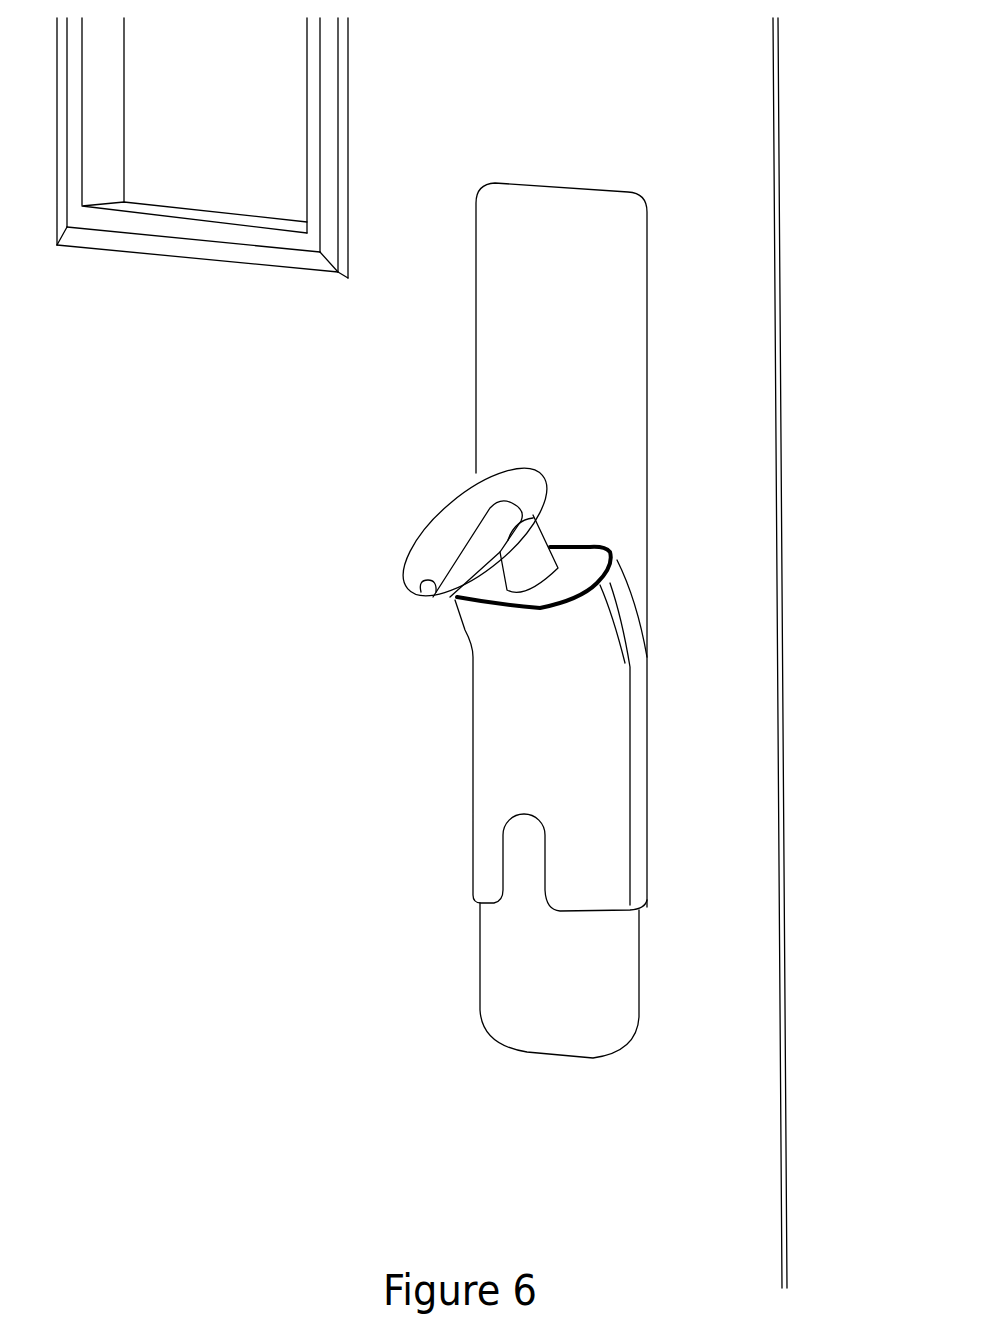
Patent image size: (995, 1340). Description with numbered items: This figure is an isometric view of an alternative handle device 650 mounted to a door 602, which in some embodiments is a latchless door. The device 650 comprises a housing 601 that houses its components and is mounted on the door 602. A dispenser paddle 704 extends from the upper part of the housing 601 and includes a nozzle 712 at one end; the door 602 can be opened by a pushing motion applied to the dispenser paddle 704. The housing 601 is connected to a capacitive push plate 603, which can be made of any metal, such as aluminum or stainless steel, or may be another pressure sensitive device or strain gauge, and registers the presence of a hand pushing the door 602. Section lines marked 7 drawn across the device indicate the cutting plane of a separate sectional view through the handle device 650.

The housing 601 is at (622, 697).
The door 602 is at (740, 540).
The capacitive push plate 603 is at (633, 422).
The alternative handle device 650 is at (393, 458).
The dispenser paddle 704 is at (428, 540).
The nozzle 712 is at (425, 588).
The section line 7 is at (480, 520).